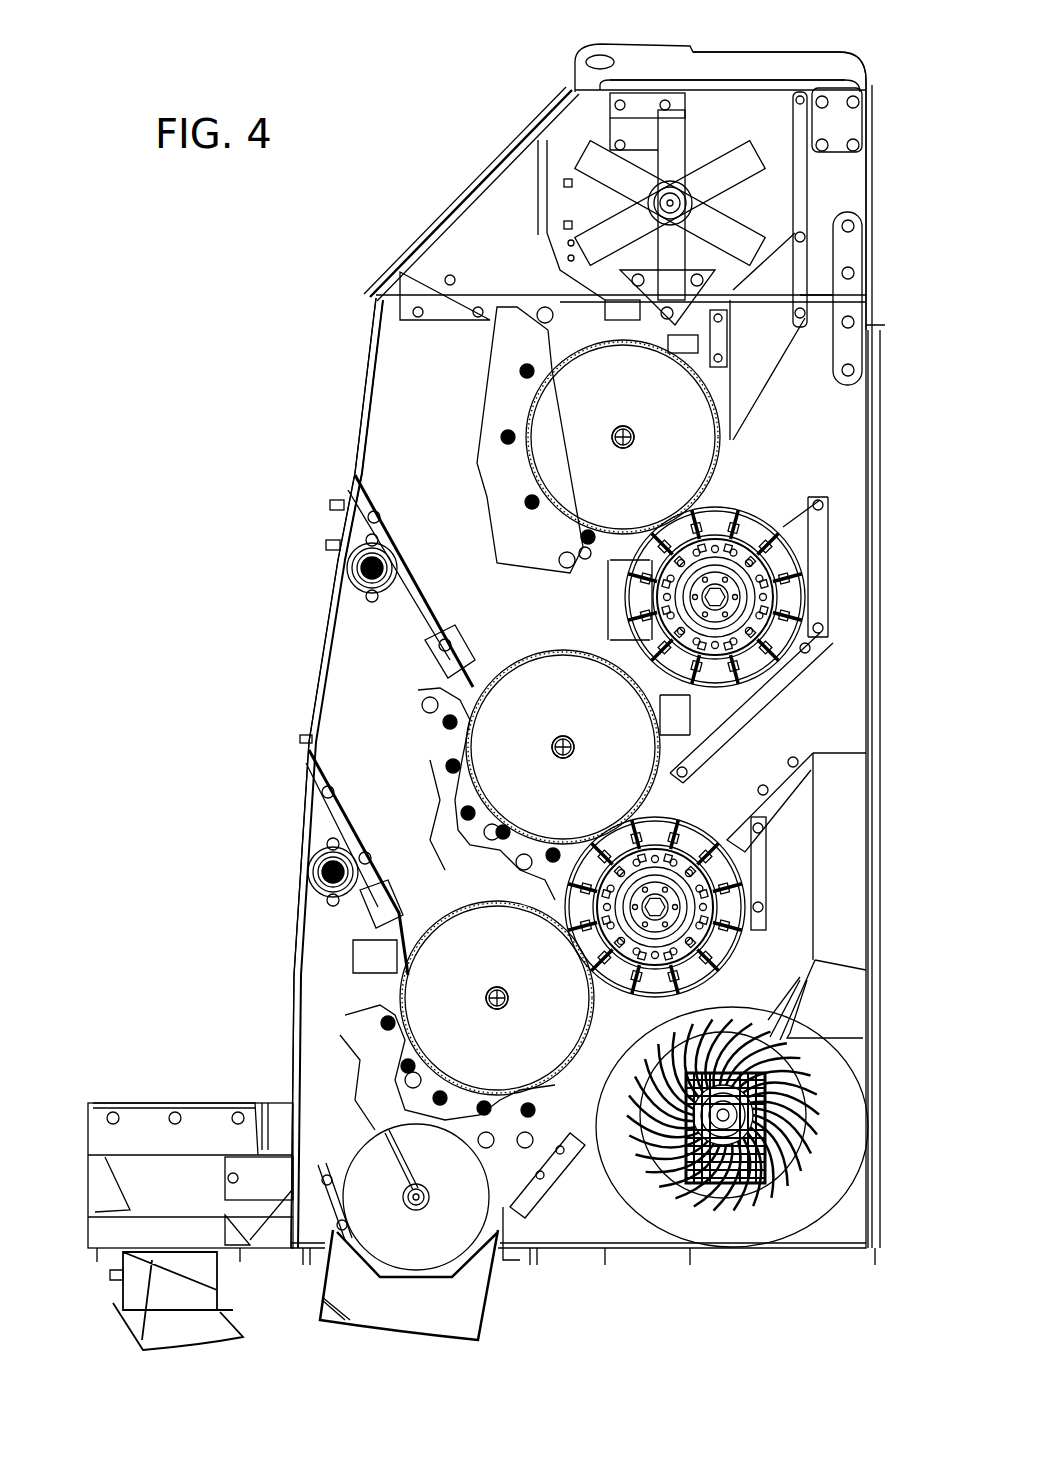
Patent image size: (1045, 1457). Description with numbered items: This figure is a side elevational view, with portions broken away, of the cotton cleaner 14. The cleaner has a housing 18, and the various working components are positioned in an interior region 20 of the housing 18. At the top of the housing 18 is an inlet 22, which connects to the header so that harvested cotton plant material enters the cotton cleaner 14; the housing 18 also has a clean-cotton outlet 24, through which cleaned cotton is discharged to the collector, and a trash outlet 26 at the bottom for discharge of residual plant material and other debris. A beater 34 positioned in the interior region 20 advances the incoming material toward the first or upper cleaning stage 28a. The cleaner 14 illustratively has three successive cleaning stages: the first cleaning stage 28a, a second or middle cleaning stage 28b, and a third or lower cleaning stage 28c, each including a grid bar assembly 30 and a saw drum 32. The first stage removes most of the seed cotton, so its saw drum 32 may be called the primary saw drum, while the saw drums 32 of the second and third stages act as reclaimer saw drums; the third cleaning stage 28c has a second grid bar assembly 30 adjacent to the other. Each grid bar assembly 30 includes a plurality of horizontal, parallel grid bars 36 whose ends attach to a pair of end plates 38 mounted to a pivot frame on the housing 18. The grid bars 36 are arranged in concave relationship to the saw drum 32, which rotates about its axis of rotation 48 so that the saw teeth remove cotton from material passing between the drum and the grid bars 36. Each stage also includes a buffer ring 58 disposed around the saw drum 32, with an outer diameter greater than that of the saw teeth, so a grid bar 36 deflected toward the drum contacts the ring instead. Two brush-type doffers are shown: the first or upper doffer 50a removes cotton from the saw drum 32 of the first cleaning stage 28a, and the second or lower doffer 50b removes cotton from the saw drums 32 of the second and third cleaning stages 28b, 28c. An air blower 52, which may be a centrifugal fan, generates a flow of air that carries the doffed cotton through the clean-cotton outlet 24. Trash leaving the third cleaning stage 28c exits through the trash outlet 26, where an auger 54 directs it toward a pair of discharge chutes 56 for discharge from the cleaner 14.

The cotton cleaner 14 is at (405, 98).
The housing 18 is at (360, 362).
The interior region 20 is at (390, 395).
The inlet 22 is at (735, 93).
The clean-cotton outlet 24 is at (828, 88).
The trash outlet 26 is at (512, 1298).
The first cleaning stage 28a is at (455, 465).
The second cleaning stage 28b is at (400, 720).
The third cleaning stage 28c is at (320, 1025).
The grid bar assembly 30 is at (478, 360).
The saw drum 32 is at (700, 448).
The beater 34 is at (680, 145).
The grid bar 36 is at (490, 396).
The end plate 38 is at (495, 425).
The axis of rotation 48 is at (632, 445).
The first doffer 50a is at (812, 607).
The second doffer 50b is at (765, 850).
The air blower 52 is at (778, 1215).
The auger 54 is at (395, 1233).
The discharge chute 56 is at (500, 1310).
The buffer ring 58 is at (680, 355).